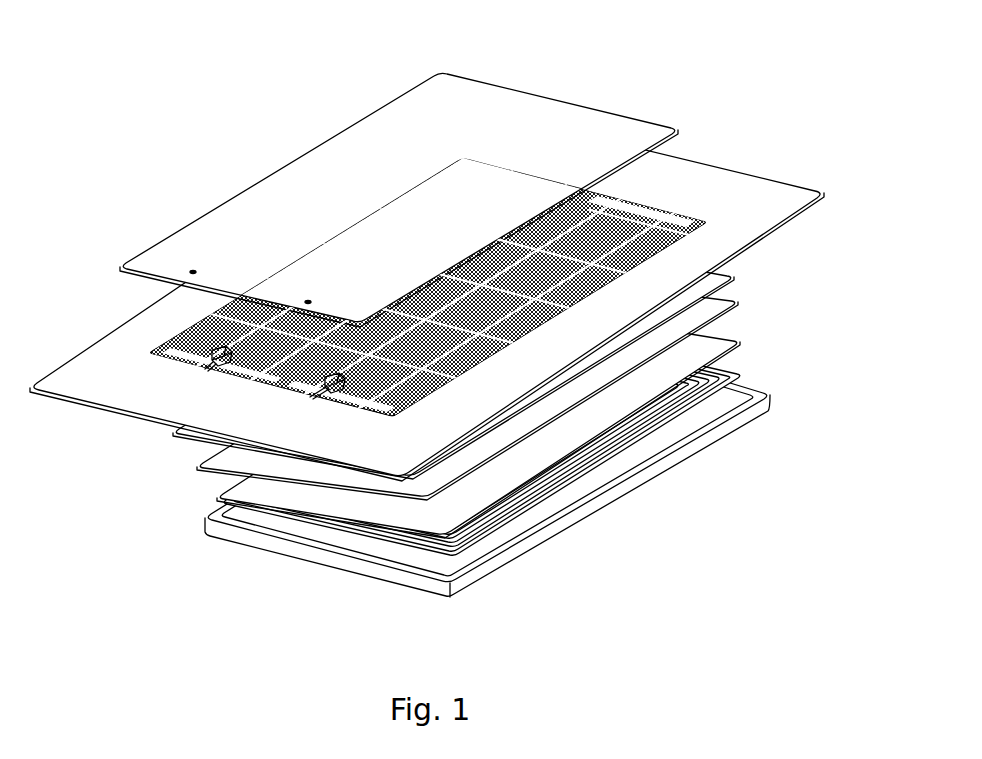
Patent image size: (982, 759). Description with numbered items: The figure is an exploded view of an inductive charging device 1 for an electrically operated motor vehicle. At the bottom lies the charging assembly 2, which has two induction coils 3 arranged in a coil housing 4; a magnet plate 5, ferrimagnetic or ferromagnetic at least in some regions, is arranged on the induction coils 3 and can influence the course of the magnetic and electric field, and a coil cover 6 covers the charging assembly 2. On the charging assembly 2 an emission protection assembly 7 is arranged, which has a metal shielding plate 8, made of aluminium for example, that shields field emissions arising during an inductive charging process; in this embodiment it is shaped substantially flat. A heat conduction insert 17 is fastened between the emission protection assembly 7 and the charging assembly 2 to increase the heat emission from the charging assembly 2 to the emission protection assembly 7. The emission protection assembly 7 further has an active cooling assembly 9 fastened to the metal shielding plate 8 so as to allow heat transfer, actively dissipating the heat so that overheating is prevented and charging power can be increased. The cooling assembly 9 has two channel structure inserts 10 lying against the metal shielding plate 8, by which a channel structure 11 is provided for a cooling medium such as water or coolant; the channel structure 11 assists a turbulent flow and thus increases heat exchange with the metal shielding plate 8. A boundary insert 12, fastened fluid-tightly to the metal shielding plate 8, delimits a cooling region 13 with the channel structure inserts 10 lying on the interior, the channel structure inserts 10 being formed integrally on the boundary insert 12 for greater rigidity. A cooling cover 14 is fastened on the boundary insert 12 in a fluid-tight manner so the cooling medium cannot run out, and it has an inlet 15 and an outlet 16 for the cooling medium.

The inductive charging device 1 is at (464, 305).
The charging assembly 2 is at (550, 451).
The induction coils 3 is at (700, 406).
The coil housing 4 is at (678, 456).
The magnet plate 5 is at (725, 338).
The coil cover 6 is at (724, 305).
The emission protection assembly 7 is at (464, 279).
The metal shielding plate 8 is at (781, 211).
The active cooling assembly 9 is at (677, 205).
The channel structure inserts 10 is at (410, 294).
The channel structure 11 is at (508, 262).
The boundary insert 12 is at (700, 221).
The cooling region 13 is at (432, 318).
The cooling cover 14 is at (200, 230).
The inlet 15 is at (205, 368).
The outlet 16 is at (312, 398).
The heat conduction insert 17 is at (734, 277).